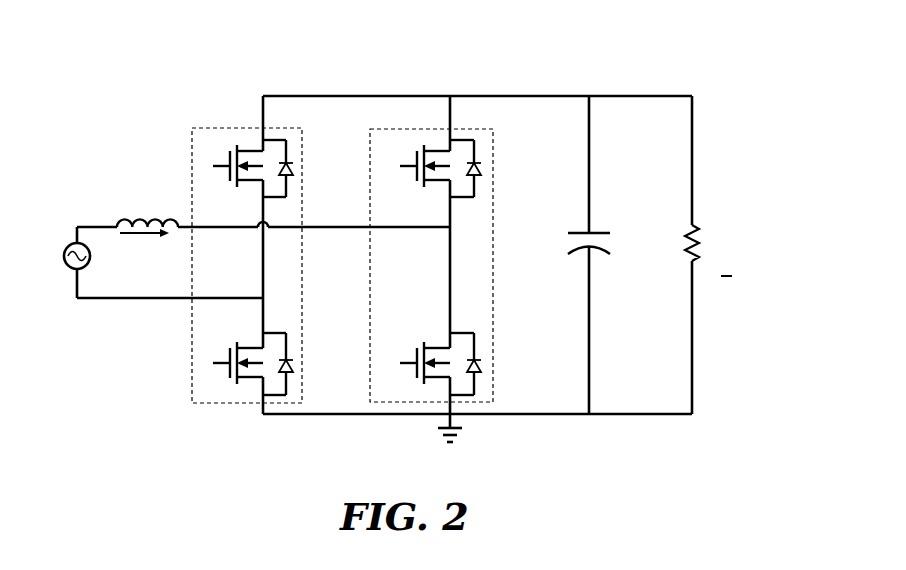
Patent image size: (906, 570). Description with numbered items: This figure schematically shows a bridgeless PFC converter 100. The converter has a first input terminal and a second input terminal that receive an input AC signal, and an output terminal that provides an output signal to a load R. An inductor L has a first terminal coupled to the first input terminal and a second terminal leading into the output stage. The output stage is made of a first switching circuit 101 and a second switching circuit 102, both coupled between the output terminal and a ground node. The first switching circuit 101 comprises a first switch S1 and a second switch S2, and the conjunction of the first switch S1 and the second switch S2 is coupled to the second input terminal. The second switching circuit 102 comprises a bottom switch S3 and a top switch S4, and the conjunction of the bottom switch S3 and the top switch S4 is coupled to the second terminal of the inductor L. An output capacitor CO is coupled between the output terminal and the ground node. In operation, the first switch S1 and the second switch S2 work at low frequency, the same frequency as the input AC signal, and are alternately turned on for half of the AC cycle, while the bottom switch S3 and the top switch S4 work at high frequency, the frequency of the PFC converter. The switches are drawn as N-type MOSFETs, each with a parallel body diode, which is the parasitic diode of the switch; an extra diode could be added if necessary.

The bridgeless PFC converter 100 is at (133, 115).
The first switching circuit 101 is at (185, 362).
The second switching circuit 102 is at (498, 352).
The first switch S1 is at (245, 364).
The second switch S2 is at (245, 168).
The bottom switch S3 is at (427, 364).
The top switch S4 is at (427, 168).
The inductor L is at (147, 226).
The output capacitor CO is at (572, 255).
The load R is at (677, 255).